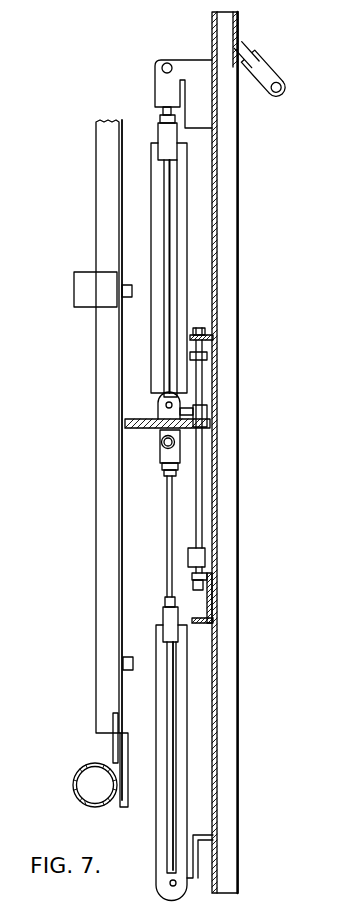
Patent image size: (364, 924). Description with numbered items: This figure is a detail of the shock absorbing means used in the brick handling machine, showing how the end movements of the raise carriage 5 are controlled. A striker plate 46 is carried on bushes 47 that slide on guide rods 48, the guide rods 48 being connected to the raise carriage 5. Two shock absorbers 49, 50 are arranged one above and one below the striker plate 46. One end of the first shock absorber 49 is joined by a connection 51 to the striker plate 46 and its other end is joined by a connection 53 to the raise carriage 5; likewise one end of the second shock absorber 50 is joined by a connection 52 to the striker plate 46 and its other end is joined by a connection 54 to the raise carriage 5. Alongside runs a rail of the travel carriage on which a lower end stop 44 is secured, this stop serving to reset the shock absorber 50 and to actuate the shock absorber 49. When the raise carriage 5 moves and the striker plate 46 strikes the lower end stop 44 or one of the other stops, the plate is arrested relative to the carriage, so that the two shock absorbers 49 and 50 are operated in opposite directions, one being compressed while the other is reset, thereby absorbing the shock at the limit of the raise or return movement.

The raise carriage 5 is at (225, 178).
The lower end stop 44 is at (125, 657).
The striker plate 46 is at (125, 423).
The bush 47 is at (205, 415).
The guide rod 48 is at (202, 480).
The shock absorber 49 is at (165, 235).
The shock absorber 50 is at (180, 693).
The connection 51 is at (168, 405).
The connection 52 is at (162, 446).
The connection 53 is at (158, 85).
The connection 54 is at (170, 883).